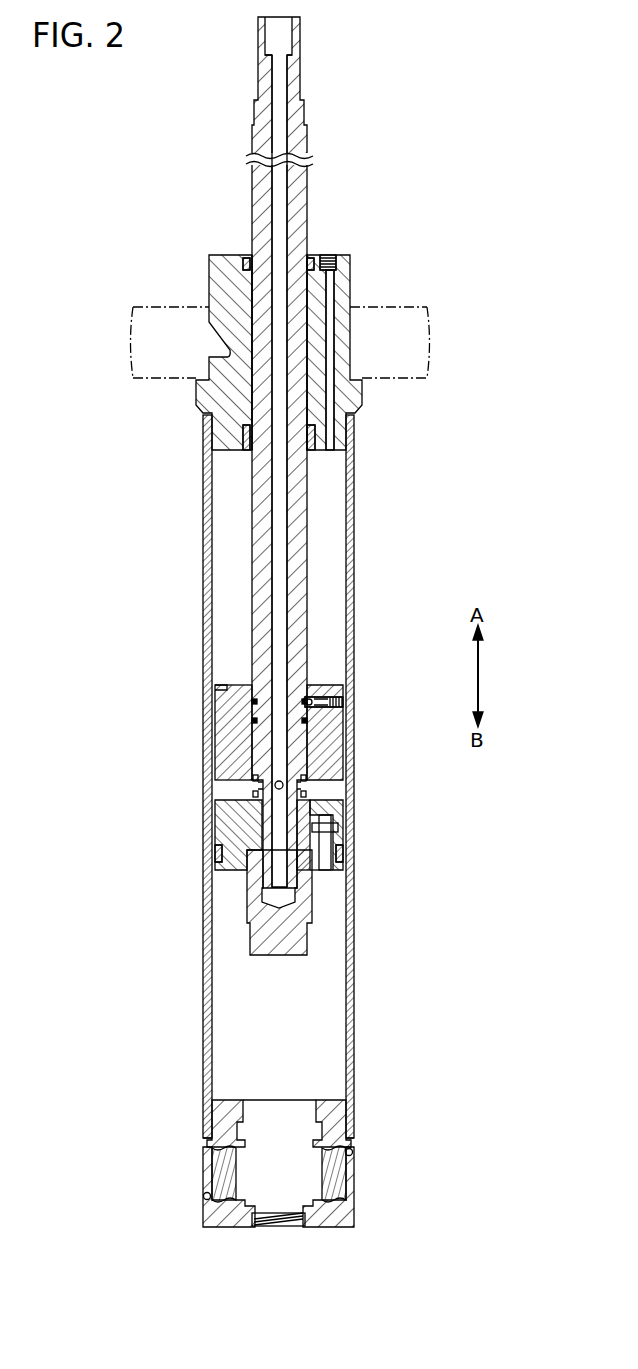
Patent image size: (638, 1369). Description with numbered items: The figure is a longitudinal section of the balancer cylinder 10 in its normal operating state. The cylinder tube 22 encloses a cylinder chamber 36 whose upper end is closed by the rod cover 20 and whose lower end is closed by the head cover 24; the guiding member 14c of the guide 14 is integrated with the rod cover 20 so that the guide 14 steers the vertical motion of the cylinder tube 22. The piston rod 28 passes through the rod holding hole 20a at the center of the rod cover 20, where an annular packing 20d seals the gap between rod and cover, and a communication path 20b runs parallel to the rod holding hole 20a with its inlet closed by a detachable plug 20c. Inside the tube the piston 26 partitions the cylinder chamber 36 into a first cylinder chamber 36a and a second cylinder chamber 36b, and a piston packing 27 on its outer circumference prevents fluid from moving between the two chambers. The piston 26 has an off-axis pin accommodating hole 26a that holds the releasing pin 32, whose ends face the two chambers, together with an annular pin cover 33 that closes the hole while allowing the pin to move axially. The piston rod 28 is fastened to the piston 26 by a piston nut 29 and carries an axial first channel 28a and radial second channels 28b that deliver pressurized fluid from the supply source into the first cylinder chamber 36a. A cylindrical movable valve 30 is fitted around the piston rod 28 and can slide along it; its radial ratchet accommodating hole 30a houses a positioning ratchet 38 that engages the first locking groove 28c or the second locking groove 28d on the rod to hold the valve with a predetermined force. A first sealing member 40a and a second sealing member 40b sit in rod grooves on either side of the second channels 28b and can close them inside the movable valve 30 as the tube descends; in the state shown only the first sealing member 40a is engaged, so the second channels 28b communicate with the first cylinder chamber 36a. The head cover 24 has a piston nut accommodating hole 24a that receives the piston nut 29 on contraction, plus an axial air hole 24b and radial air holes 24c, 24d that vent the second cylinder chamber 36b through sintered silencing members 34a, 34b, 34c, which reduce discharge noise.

The balancer cylinder 10 is at (188, 89).
The guiding member 14c is at (307, 313).
The guide 14 is at (398, 305).
The rod cover 20 is at (284, 329).
The rod holding hole 20a is at (305, 290).
The communication path 20b is at (328, 396).
The plug 20c is at (329, 256).
The annular packing 20d is at (245, 442).
The cylinder tube 22 is at (350, 527).
The head cover 24 is at (277, 1175).
The piston nut accommodating hole 24a is at (243, 1130).
The air hole 24b is at (295, 1226).
The air hole 24c is at (208, 1192).
The air hole 24d is at (352, 1153).
The piston 26 is at (266, 835).
The pin accommodating hole 26a is at (312, 832).
The piston packing 27 is at (216, 852).
The piston rod 28 is at (280, 452).
The first channel 28a is at (277, 561).
The second channels 28b is at (302, 783).
The first locking groove 28c is at (253, 702).
The second locking groove 28d is at (253, 720).
The piston nut 29 is at (265, 937).
The movable valve 30 is at (290, 715).
The ratchet accommodating hole 30a is at (323, 705).
The releasing pin 32 is at (322, 858).
The pin cover 33 is at (348, 805).
The silencing member 34a is at (272, 1228).
The silencing member 34b is at (212, 1180).
The silencing member 34c is at (348, 1190).
The cylinder chamber 36 is at (336, 775).
The first cylinder chamber 36a is at (325, 595).
The second cylinder chamber 36b is at (325, 998).
The positioning ratchet 38 is at (345, 702).
The first sealing member 40a is at (253, 776).
The second sealing member 40b is at (253, 795).